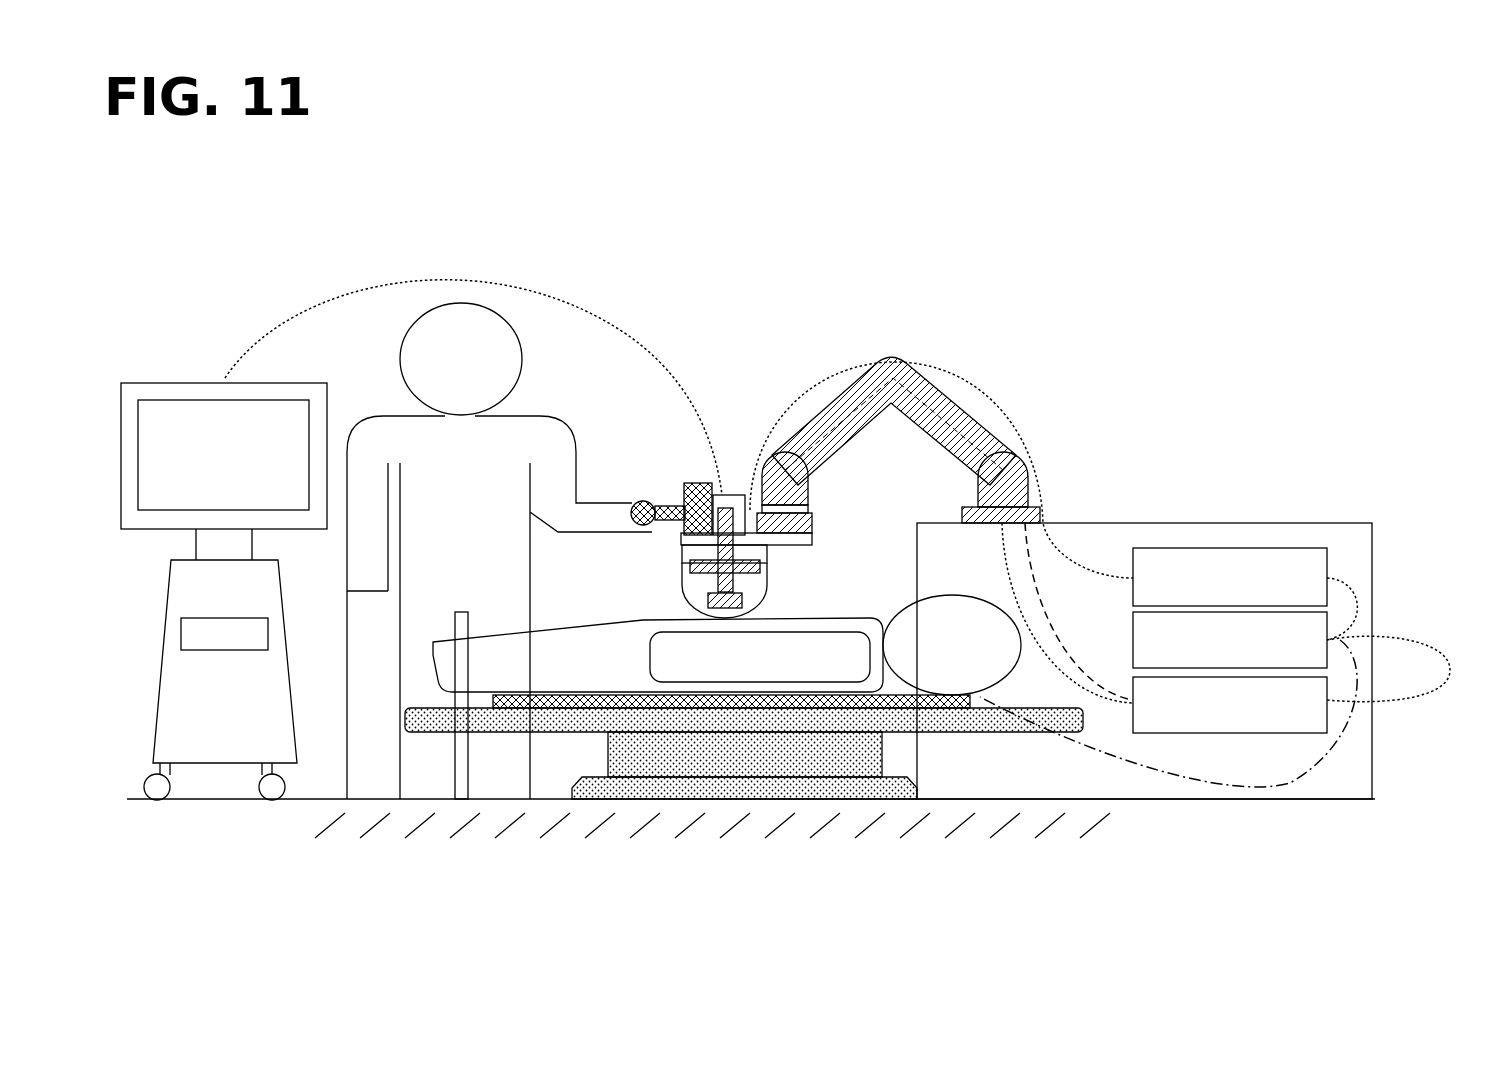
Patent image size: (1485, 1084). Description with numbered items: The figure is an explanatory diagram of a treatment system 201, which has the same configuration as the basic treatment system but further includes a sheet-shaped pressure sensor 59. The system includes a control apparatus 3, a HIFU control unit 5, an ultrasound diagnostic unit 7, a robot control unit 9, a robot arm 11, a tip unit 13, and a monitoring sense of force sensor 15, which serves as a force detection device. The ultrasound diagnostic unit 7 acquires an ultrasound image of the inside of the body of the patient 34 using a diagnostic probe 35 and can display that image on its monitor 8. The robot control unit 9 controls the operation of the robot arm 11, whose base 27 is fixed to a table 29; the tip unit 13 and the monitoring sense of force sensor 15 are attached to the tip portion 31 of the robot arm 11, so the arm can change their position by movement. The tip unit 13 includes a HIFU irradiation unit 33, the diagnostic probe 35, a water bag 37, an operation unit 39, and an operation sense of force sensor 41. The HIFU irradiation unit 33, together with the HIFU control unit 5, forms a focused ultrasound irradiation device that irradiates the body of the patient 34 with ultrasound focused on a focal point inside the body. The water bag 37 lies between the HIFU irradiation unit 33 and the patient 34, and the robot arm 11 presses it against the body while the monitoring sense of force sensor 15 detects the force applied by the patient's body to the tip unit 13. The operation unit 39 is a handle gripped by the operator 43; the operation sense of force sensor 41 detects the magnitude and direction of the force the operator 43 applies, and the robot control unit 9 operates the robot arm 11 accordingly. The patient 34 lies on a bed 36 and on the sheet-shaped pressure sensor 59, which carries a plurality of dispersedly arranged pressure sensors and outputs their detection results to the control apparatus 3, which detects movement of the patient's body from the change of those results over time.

The treatment system 201 is at (1321, 237).
The monitor 8 is at (186, 479).
The ultrasound diagnostic unit 7 is at (195, 700).
The operator 43 is at (503, 357).
The operation unit 39 is at (672, 507).
The operation sense of force sensor 41 is at (690, 483).
The tip unit 13 is at (725, 495).
The monitoring sense of force sensor 15 is at (812, 522).
The HIFU irradiation unit 33 is at (690, 568).
The water bag 37 is at (697, 597).
The diagnostic probe 35 is at (755, 598).
The robot arm 11 is at (917, 392).
The tip portion 31 is at (775, 452).
The base 27 is at (1042, 510).
The HIFU control unit 5 is at (1305, 548).
The table 29 is at (1185, 523).
The control apparatus 3 is at (1133, 638).
The robot control unit 9 is at (1235, 733).
The patient 34 is at (972, 678).
The sheet-shaped pressure sensor 59 is at (553, 696).
The bed 36 is at (805, 733).